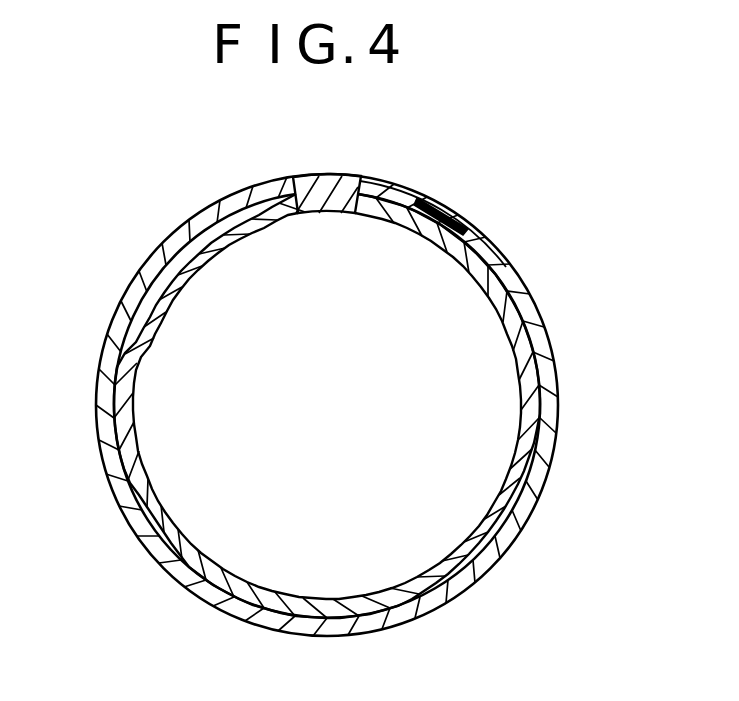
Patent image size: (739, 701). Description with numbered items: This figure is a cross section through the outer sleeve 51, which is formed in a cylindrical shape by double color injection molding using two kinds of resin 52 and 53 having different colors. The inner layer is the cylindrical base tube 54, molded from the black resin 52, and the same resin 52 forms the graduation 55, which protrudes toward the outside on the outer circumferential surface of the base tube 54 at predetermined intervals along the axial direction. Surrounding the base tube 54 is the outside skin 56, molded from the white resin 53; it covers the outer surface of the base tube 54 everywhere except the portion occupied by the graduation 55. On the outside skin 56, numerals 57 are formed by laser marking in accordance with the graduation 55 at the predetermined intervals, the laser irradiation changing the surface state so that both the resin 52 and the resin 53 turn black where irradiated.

The outer sleeve 51 is at (558, 385).
The resin 52 is at (513, 468).
The resin 53 is at (543, 487).
The base tube 54 is at (155, 305).
The graduation 55 is at (318, 192).
The outside skin 56 is at (148, 262).
The numerals 57 is at (456, 212).